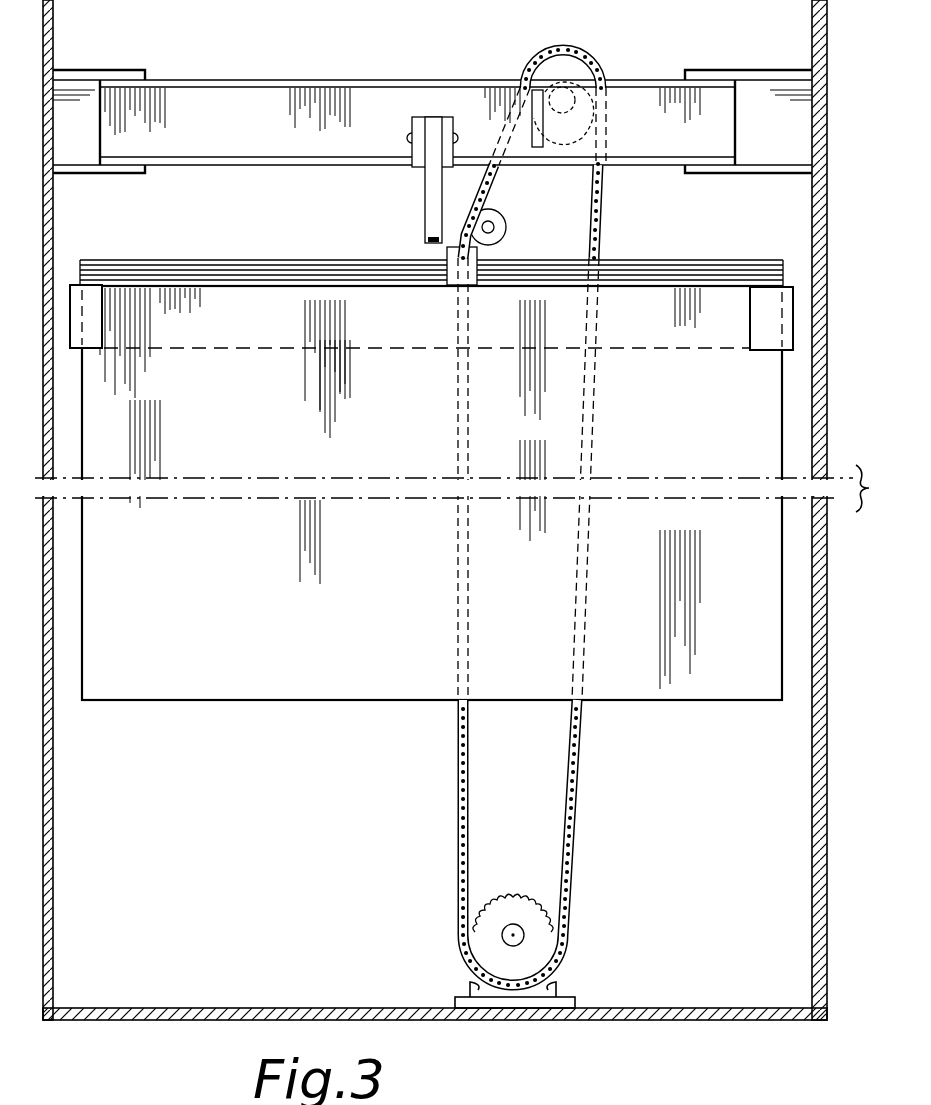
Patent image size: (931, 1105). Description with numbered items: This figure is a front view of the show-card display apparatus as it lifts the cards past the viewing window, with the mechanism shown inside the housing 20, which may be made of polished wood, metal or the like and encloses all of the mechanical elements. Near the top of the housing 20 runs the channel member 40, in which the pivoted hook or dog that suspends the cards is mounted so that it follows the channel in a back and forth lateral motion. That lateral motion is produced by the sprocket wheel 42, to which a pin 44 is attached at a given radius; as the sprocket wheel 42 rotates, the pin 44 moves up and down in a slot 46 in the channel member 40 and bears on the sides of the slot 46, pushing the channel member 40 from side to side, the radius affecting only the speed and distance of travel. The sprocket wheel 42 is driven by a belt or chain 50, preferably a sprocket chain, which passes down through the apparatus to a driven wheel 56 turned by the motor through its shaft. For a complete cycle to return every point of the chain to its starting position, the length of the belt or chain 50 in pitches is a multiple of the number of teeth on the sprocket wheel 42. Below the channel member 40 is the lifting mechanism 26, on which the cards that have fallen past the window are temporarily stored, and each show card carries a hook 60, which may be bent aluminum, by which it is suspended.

The housing 20 is at (108, 1022).
The lifting mechanism 26 is at (783, 312).
The channel member 40 is at (327, 84).
The sprocket wheel 42 is at (572, 70).
The pin 44 is at (533, 100).
The slot 46 is at (540, 150).
The belt or chain 50 is at (580, 778).
The driven wheel 56 is at (527, 897).
The hook 60 is at (363, 266).